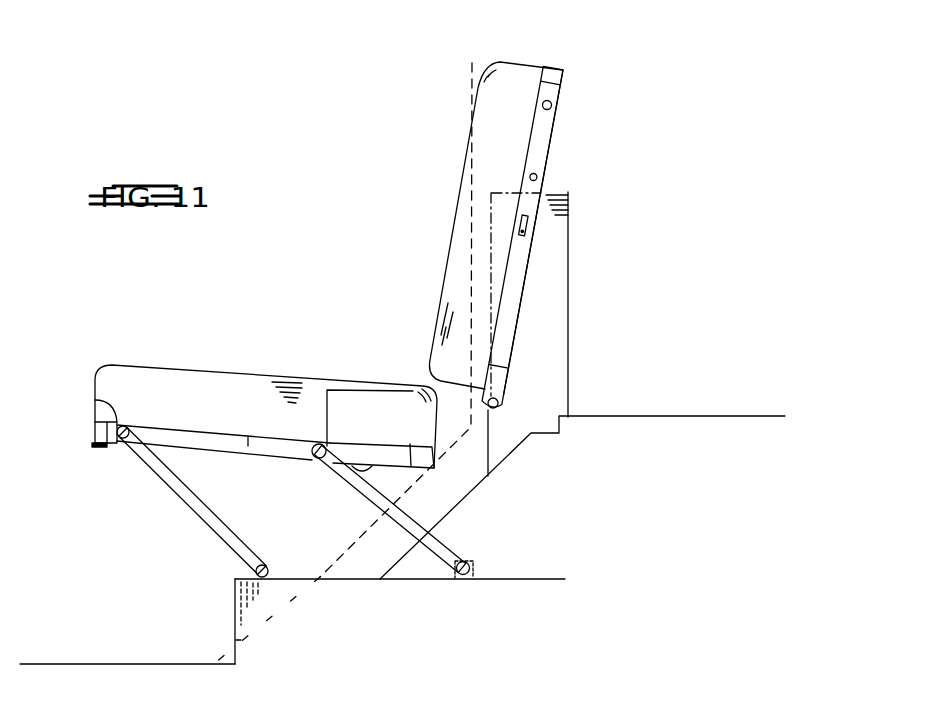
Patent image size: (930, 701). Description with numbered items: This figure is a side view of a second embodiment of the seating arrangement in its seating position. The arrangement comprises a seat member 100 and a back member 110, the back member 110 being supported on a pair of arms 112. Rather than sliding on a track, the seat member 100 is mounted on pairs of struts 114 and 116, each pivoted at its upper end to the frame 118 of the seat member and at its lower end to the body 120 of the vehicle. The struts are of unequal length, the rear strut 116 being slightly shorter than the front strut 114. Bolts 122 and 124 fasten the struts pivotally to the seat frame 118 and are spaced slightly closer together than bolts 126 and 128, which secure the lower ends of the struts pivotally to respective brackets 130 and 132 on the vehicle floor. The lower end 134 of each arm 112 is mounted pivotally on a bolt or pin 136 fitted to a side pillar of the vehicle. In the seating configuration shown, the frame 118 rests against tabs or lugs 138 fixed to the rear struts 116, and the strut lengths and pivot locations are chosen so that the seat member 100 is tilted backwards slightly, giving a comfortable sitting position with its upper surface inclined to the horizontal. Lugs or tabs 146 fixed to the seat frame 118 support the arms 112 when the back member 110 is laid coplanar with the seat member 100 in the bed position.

The seat member 100 is at (233, 388).
The back member 110 is at (453, 278).
The arms 112 is at (533, 276).
The strut 114 is at (208, 533).
The strut 116 is at (367, 495).
The frame 118 is at (207, 447).
The body 120 is at (354, 579).
The bolt 122 is at (96, 400).
The bolt 124 is at (328, 392).
The bolt 126 is at (263, 580).
The bolt 128 is at (462, 582).
The bracket 130 is at (235, 570).
The bracket 132 is at (473, 563).
The lower end 134 is at (500, 405).
The bolt or pin 136 is at (495, 410).
The tabs or lugs 138 is at (375, 460).
The lugs or tabs 146 is at (101, 448).